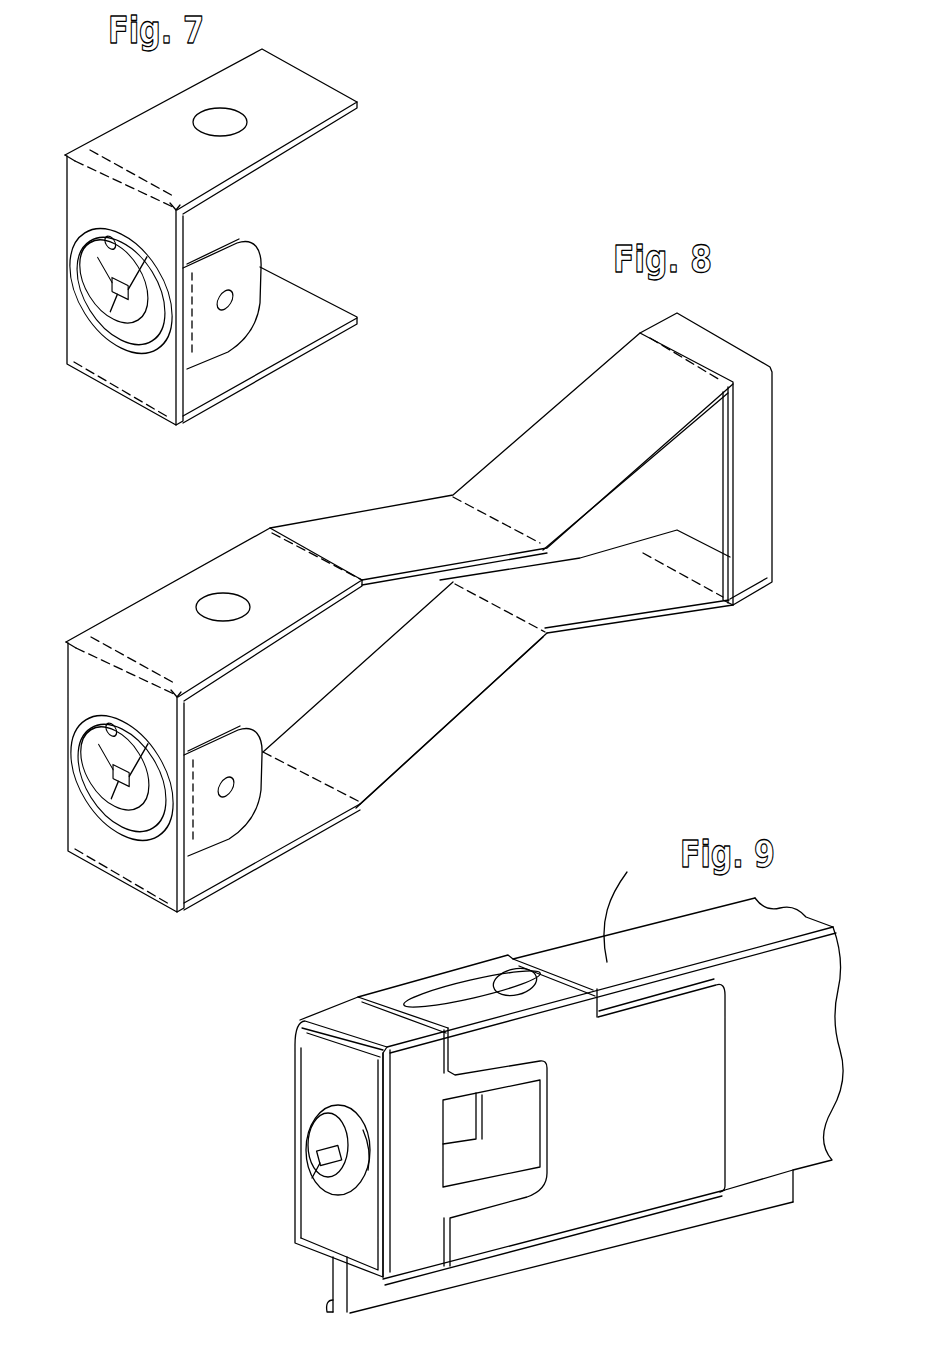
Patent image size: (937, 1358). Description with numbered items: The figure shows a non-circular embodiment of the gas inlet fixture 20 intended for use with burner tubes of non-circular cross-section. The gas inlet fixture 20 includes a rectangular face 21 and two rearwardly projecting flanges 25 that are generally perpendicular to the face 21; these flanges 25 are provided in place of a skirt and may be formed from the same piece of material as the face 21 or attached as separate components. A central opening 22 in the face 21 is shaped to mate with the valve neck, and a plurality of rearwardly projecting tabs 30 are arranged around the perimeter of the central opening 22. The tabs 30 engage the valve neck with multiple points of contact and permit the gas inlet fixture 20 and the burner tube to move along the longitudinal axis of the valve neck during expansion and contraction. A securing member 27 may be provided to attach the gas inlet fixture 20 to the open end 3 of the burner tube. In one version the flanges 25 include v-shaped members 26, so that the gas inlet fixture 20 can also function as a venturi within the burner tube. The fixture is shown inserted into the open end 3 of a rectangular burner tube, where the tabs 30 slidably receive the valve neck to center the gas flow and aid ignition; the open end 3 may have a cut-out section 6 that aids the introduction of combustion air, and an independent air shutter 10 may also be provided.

In FIG. 9, the open end 3 is at (302, 1017).
In FIG. 9, the cut-out section 6 is at (510, 1175).
In FIG. 9, the air shutter 10 is at (674, 1196).
In FIG. 7, the gas inlet fixture 20 is at (214, 254).
In FIG. 8, the gas inlet fixture 20 is at (393, 635).
In FIG. 9, the gas inlet fixture 20 is at (332, 1154).
In FIG. 7, the face 21 is at (82, 198).
In FIG. 8, the face 21 is at (81, 678).
In FIG. 9, the face 21 is at (307, 1067).
In FIG. 7, the central opening 22 is at (134, 342).
In FIG. 8, the central opening 22 is at (142, 822).
In FIG. 9, the central opening 22 is at (314, 1181).
In FIG. 7, the flanges 25 is at (294, 118).
In FIG. 8, the flanges 25 is at (214, 614).
In FIG. 7, the v-shaped members 26 is at (324, 312).
In FIG. 8, the v-shaped members 26 is at (547, 636).
In FIG. 7, the securing member 27 is at (226, 335).
In FIG. 8, the securing member 27 is at (230, 817).
In FIG. 7, the tabs 30 is at (124, 308).
In FIG. 8, the tabs 30 is at (123, 817).
In FIG. 9, the tabs 30 is at (314, 1124).